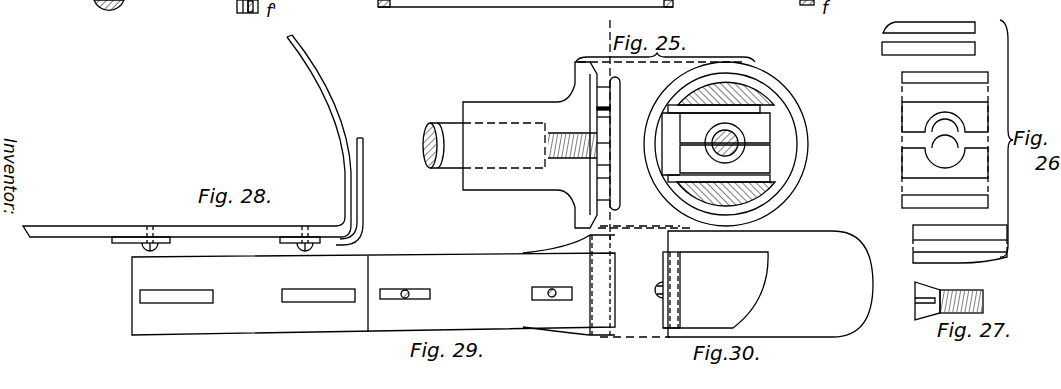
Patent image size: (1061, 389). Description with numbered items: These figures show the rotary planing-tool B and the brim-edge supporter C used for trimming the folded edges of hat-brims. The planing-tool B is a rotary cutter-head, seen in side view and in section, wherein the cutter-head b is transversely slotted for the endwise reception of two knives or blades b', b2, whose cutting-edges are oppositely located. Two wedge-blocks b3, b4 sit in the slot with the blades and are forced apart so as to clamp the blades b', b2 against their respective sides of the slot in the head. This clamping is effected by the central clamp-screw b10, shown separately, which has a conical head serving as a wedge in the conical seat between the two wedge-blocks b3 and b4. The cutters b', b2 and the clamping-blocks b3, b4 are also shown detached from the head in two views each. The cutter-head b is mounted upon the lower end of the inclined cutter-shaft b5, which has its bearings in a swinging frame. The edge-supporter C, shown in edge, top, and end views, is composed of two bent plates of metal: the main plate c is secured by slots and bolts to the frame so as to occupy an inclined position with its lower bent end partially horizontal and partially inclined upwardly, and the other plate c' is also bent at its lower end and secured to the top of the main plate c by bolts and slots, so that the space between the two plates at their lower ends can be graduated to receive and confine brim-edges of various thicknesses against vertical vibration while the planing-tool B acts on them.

In FIG. 25, the planing-tool B is at (765, 65).
In FIG. 25, the cutter-head b is at (687, 143).
In FIG. 25, the knife or blade b' is at (678, 96).
In FIG. 26, the knife or blade b' is at (918, 38).
In FIG. 25, the knife or blade b2 is at (604, 181).
In FIG. 26, the knife or blade b2 is at (949, 244).
In FIG. 25, the wedge-block b3 is at (602, 130).
In FIG. 26, the wedge-block b3 is at (935, 100).
In FIG. 25, the wedge-block b4 is at (598, 160).
In FIG. 26, the wedge-block b4 is at (937, 173).
In FIG. 25, the cutter-shaft b5 is at (510, 136).
In FIG. 25, the central clamp-screw b10 is at (737, 144).
In FIG. 27, the central clamp-screw b10 is at (938, 301).
In FIG. 28, the edge-supporter C is at (187, 136).
In FIG. 29, the edge-supporter C is at (373, 283).
In FIG. 30, the edge-supporter C is at (770, 275).
In FIG. 28, the main plate c is at (216, 229).
In FIG. 29, the main plate c is at (247, 282).
In FIG. 30, the main plate c is at (725, 287).
In FIG. 28, the plate c' is at (357, 191).
In FIG. 29, the plate c' is at (476, 280).
In FIG. 30, the plate c' is at (681, 290).